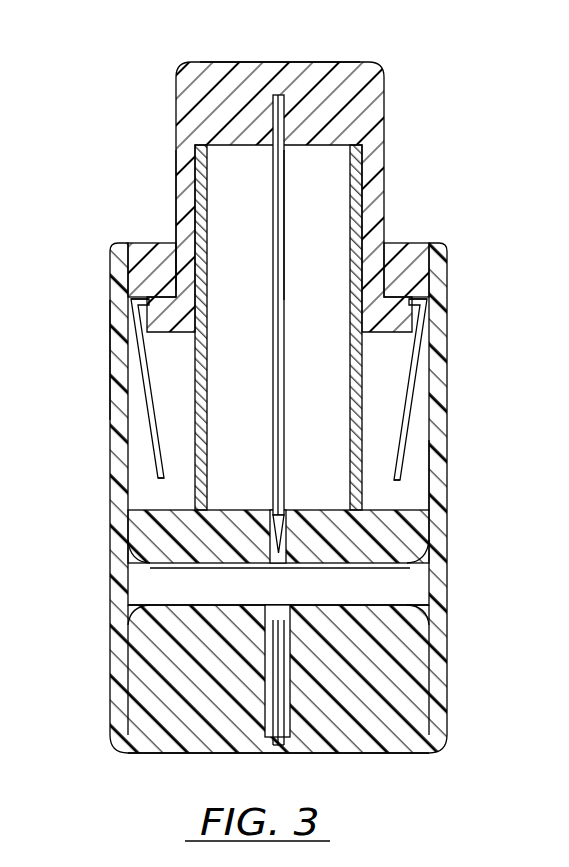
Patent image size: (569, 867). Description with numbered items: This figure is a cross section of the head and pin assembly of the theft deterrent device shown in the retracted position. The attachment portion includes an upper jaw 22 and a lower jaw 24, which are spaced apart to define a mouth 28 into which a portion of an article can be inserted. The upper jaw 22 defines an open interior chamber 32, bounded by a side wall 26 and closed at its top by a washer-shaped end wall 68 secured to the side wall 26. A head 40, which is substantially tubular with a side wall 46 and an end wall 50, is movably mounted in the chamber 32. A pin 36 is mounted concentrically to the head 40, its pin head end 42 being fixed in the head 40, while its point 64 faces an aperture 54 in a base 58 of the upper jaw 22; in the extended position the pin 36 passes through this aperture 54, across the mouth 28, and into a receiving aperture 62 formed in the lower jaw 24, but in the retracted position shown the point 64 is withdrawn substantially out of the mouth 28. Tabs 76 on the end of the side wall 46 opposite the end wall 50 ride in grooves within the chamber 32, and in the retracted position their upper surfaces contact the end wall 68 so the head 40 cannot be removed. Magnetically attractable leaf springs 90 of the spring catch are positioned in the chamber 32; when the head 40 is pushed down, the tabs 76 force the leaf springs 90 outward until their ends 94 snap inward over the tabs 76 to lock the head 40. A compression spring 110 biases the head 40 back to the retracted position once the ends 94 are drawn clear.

The upper jaw 22 is at (111, 408).
The lower jaw 24 is at (111, 662).
The side wall 26 is at (111, 358).
The mouth 28 is at (150, 582).
The chamber 32 is at (412, 498).
The pin 36 is at (284, 213).
The head 40 is at (262, 197).
The pin head end 42 is at (271, 108).
The side wall 46 is at (176, 196).
The end wall 50 is at (197, 64).
The aperture 54 is at (284, 558).
The base 58 is at (150, 500).
The receiving aperture 62 is at (284, 750).
The point 64 is at (283, 536).
The end wall 68 is at (431, 243).
The tabs 76 is at (136, 334).
The leaf spring 90 is at (156, 441).
The ends 94 is at (158, 482).
The compression spring 110 is at (207, 352).